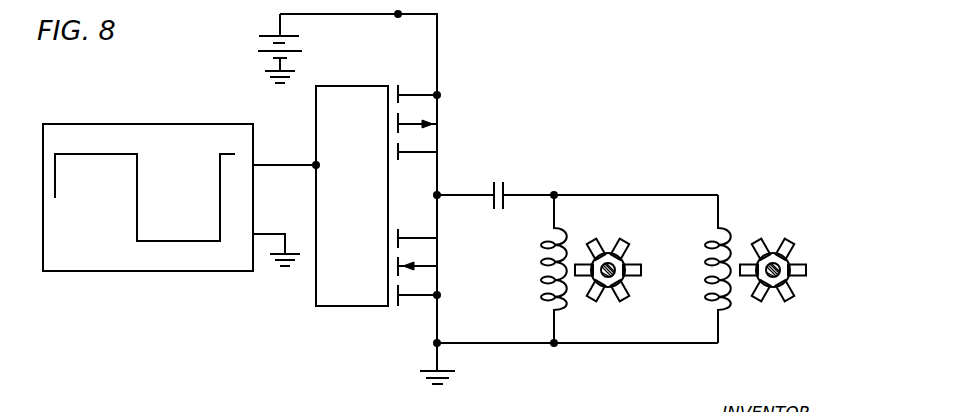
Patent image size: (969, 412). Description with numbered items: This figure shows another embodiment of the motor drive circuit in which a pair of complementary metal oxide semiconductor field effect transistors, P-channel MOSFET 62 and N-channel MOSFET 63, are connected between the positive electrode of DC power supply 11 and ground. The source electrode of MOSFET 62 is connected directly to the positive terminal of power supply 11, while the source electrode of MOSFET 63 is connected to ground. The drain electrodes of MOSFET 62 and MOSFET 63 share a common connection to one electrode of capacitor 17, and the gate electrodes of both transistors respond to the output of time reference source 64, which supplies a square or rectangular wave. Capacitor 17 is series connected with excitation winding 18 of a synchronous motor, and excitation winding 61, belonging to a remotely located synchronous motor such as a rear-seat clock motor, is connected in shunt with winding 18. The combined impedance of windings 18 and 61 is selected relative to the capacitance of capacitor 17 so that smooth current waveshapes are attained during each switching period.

The DC power supply 11 is at (268, 35).
The capacitor 17 is at (505, 188).
The excitation winding 18 is at (548, 294).
The excitation winding 61 is at (713, 296).
The P-channel MOSFET 62 is at (413, 74).
The N-channel MOSFET 63 is at (393, 318).
The time reference source 64 is at (164, 124).